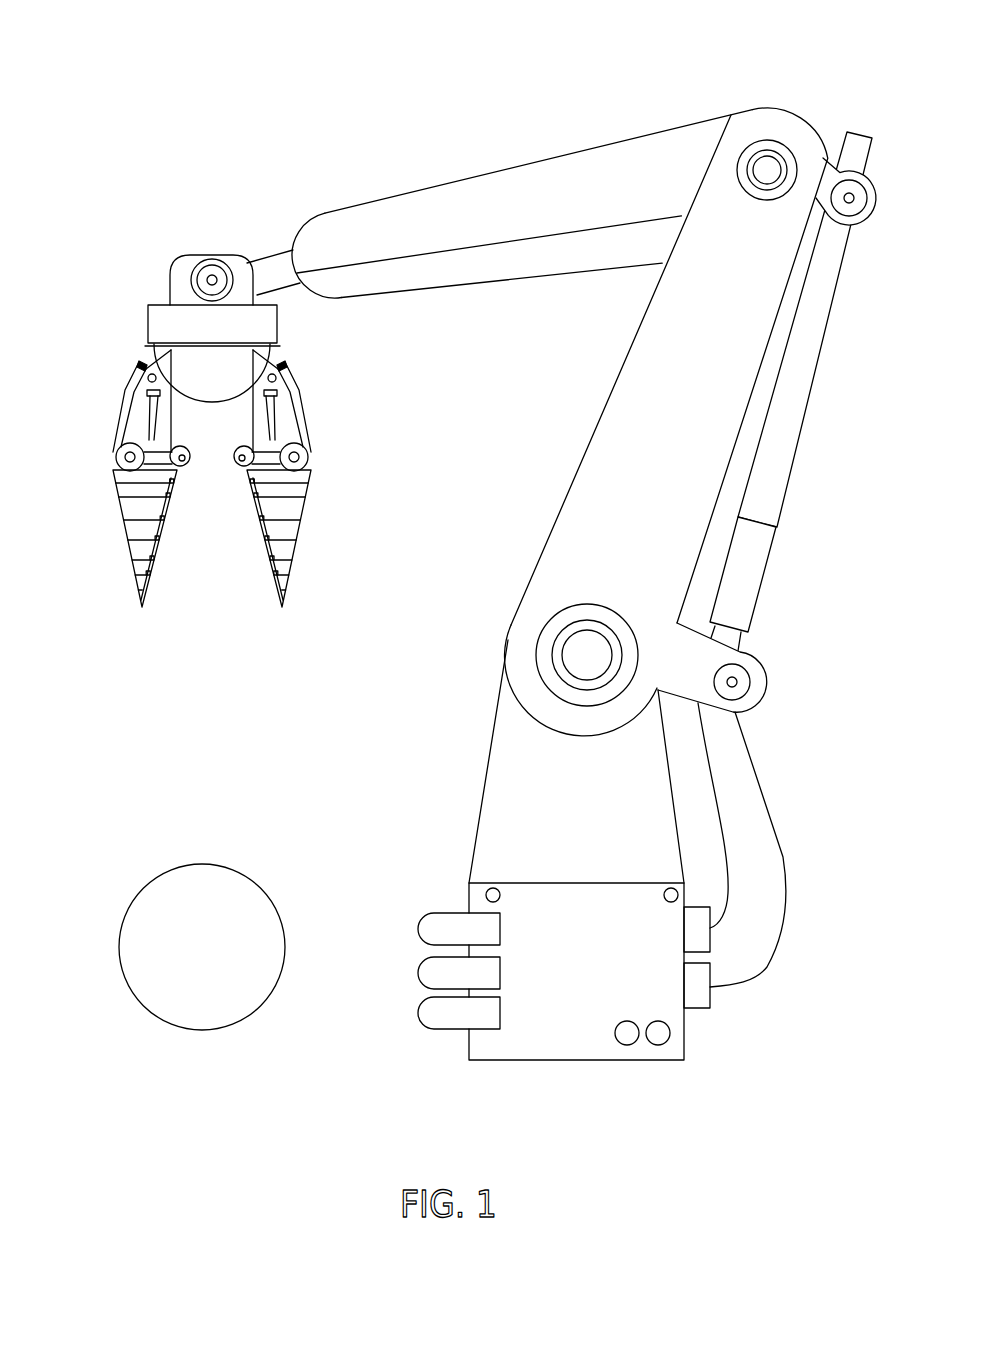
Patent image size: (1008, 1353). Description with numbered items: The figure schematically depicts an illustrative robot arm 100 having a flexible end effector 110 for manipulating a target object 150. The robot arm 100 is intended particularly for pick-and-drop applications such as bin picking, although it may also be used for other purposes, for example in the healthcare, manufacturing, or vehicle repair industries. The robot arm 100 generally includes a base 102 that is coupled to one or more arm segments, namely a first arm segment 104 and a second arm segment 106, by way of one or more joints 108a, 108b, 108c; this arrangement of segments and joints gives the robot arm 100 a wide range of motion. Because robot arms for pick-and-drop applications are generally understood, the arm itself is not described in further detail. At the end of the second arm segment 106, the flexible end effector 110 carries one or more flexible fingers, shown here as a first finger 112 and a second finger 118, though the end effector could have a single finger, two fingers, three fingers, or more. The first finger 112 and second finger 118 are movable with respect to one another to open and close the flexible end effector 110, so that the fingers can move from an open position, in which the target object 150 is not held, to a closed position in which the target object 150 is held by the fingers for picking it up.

The robot arm 100 is at (461, 542).
The base 102 is at (685, 1040).
The first arm segment 104 is at (590, 442).
The second arm segment 106 is at (542, 160).
The joint 108a is at (587, 605).
The joint 108b is at (768, 200).
The joint 108c is at (212, 258).
The flexible end effector 110 is at (219, 468).
The first finger 112 is at (118, 478).
The second finger 118 is at (312, 478).
The target object 150 is at (203, 864).